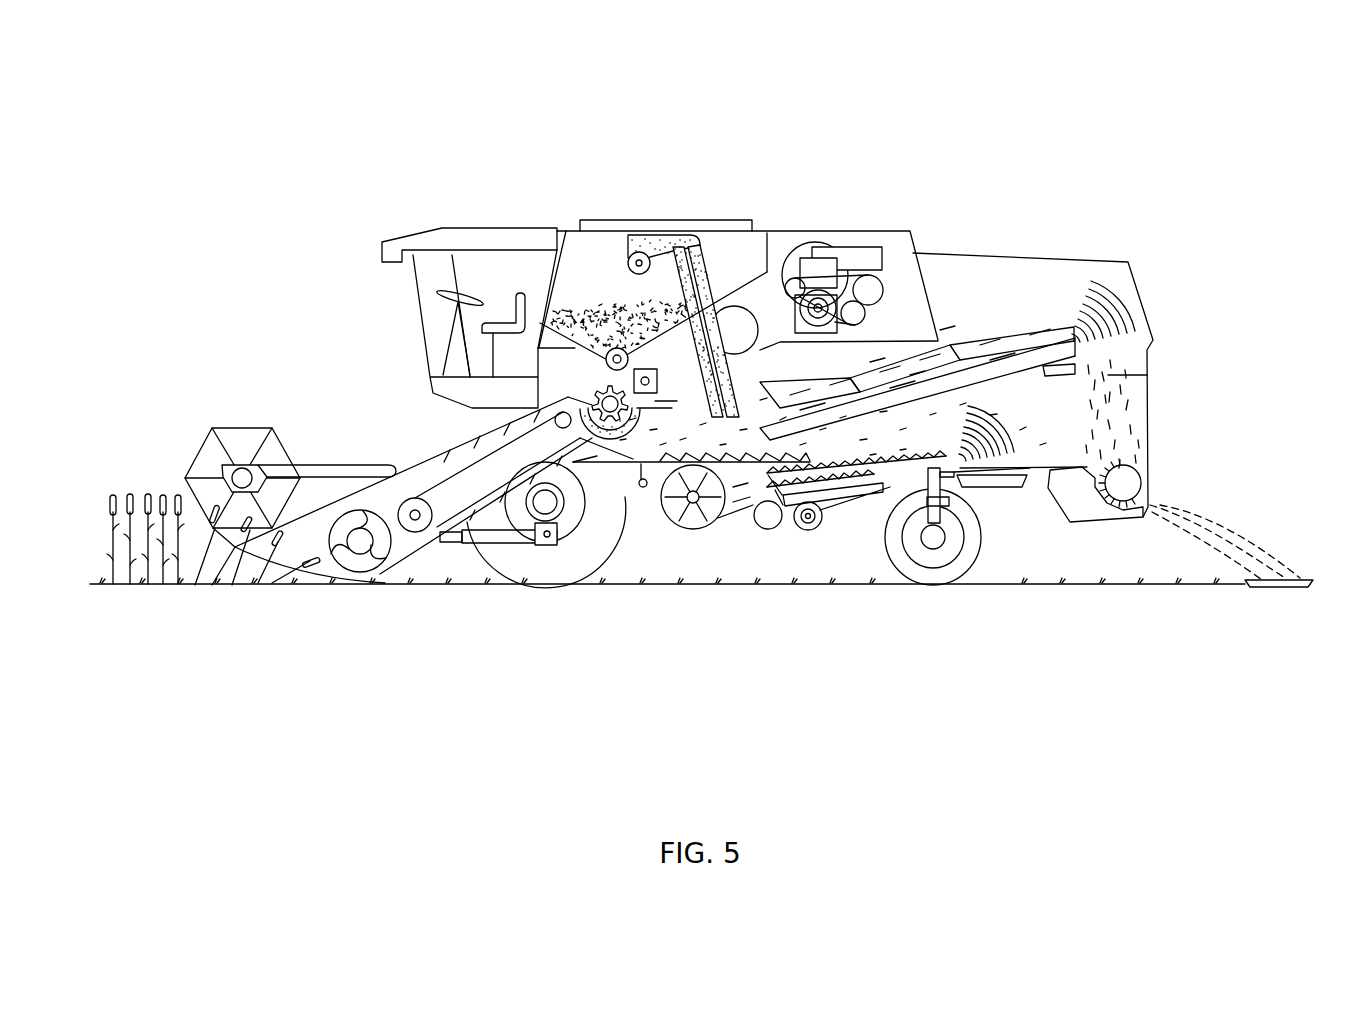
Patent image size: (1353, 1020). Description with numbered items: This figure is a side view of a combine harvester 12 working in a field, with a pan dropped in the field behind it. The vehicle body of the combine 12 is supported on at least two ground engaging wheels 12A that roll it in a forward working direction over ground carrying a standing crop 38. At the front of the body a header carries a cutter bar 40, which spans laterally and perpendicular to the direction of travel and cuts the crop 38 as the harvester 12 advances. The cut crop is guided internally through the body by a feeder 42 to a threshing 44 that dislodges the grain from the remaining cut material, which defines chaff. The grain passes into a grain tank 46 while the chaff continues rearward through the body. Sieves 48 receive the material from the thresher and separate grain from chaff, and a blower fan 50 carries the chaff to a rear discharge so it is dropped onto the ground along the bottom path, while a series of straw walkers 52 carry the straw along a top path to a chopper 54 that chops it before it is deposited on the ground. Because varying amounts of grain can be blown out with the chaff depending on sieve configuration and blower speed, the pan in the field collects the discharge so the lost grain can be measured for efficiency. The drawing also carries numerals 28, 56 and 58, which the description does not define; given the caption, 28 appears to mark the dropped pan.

The combine harvester 12 is at (462, 227).
The ground engaging wheels 12A is at (543, 562).
The field / ground surface 28 is at (1258, 583).
The crop 38 is at (113, 492).
The cutter bar 40 is at (233, 428).
The feeder 42 is at (440, 453).
The threshing 44 is at (607, 383).
The grain tank 46 is at (755, 240).
The sieves 48 is at (752, 462).
The blower fan 50 is at (690, 522).
The straw walkers 52 is at (950, 345).
The chopper 54 is at (1075, 326).
The rear wheel 56 is at (980, 528).
The residue spreader / straw chopper 58 is at (1147, 375).